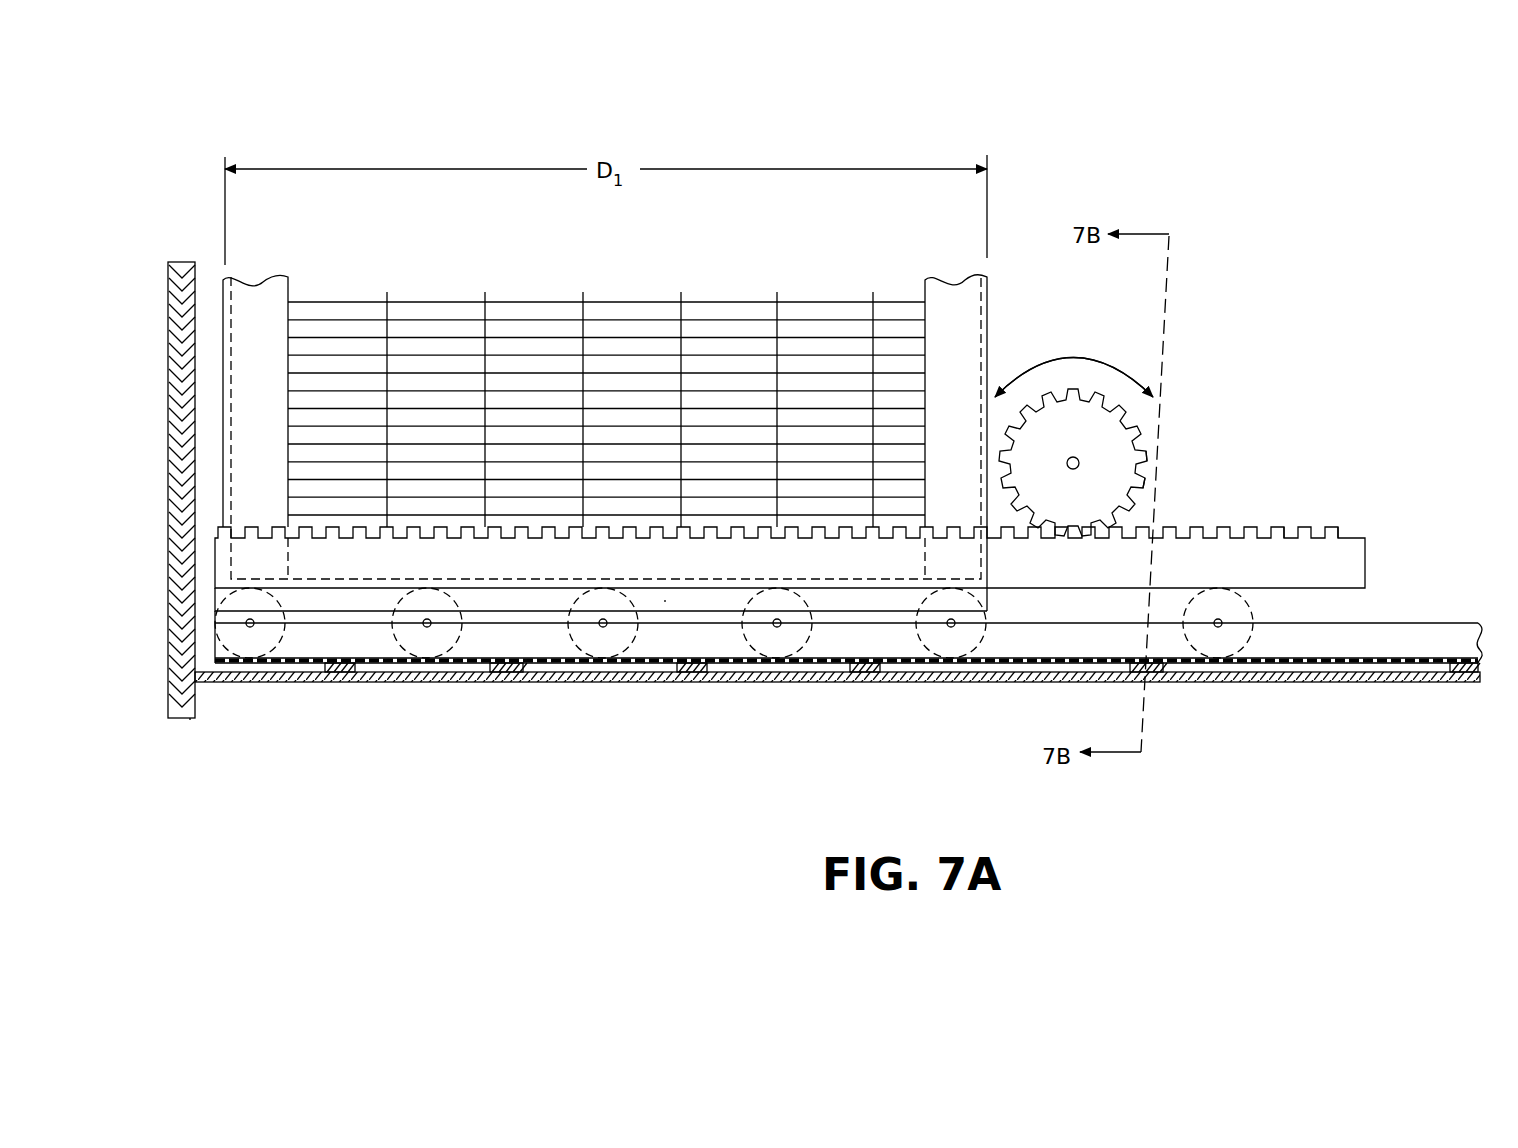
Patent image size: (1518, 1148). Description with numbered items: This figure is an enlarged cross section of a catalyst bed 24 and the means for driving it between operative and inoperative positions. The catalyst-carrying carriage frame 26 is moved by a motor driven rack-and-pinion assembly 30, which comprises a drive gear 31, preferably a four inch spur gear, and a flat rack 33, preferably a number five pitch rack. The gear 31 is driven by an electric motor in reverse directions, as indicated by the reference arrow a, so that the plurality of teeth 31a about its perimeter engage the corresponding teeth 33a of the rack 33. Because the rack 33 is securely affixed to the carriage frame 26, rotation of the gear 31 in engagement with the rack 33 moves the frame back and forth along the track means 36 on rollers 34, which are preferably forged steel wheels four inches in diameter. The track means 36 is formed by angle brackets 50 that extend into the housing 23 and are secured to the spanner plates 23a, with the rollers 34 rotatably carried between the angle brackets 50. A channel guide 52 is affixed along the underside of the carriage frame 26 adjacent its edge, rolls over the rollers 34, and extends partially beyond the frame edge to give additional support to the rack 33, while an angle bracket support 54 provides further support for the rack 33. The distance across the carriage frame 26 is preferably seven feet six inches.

The housing 23 is at (748, 683).
The spanner plates 23a is at (492, 673).
The tray 24 is at (815, 250).
The carriage frame 26 is at (262, 292).
The rack-and-pinion assembly 30 is at (1318, 440).
The drive gear 31 is at (1163, 412).
The teeth 31a is at (1146, 480).
The rack 33 is at (1372, 556).
The teeth 33a is at (1338, 522).
The rollers 34 is at (257, 645).
The track means 36 is at (1412, 638).
The angle brackets 50 is at (553, 643).
The channel guide 52 is at (192, 719).
The angle bracket support 54 is at (166, 447).
The reference arrow a is at (1110, 368).